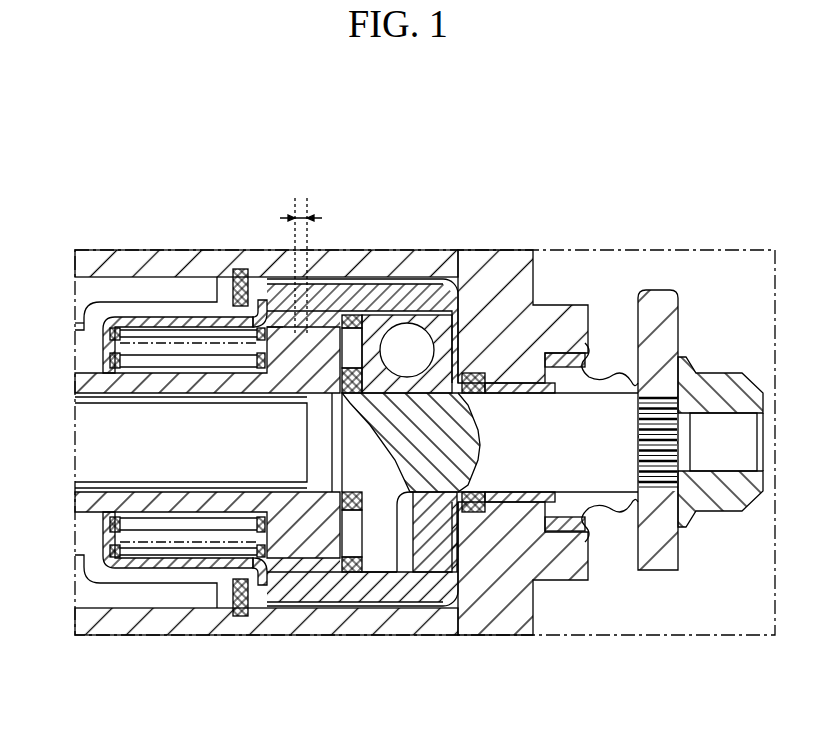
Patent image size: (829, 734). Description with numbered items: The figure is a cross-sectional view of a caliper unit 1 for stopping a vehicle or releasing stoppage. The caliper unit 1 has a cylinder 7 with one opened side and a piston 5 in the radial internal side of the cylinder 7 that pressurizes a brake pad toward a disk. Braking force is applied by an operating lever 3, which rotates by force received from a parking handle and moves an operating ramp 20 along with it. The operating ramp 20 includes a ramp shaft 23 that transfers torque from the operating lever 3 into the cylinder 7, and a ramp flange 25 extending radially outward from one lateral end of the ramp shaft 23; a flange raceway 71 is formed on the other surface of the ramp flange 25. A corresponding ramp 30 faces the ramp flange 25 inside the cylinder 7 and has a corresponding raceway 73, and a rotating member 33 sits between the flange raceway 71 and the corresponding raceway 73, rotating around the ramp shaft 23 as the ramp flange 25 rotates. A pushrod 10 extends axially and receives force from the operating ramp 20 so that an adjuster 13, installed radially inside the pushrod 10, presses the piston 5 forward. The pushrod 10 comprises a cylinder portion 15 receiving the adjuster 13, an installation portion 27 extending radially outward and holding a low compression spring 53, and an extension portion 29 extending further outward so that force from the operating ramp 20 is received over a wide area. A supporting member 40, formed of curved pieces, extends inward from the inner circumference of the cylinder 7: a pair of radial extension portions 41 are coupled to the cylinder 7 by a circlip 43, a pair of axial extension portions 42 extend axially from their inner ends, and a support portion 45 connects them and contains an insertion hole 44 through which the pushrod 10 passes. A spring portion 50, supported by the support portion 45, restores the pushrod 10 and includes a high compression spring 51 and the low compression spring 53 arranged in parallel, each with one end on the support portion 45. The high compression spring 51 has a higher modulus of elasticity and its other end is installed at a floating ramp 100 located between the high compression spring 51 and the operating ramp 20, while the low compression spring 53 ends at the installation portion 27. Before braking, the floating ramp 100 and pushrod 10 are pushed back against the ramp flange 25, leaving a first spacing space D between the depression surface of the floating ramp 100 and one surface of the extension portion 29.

The caliper unit 1 is at (617, 200).
The operating lever 3 is at (668, 572).
The piston 5 is at (177, 598).
The cylinder 7 is at (332, 622).
The pushrod 10 is at (135, 300).
The adjuster 13 is at (92, 450).
The cylinder portion 15 is at (92, 386).
The operating ramp 20 is at (440, 502).
The ramp shaft 23 is at (522, 465).
The ramp flange 25 is at (385, 615).
The installation portion 27 is at (263, 330).
The extension portion 29 is at (345, 275).
The corresponding ramp 30 is at (440, 300).
The rotating member 33 is at (407, 345).
The supporting member 40 is at (140, 565).
The radial extension portions 41 is at (273, 600).
The axial extension portions 42 is at (197, 565).
The circlip 43 is at (243, 605).
The insertion hole 44 is at (95, 545).
The support portion 45 is at (108, 560).
The spring portion 50 is at (140, 362).
The high compression spring 51 is at (157, 316).
The low compression spring 53 is at (198, 355).
The flange raceway 71 is at (425, 262).
The corresponding raceway 73 is at (463, 262).
The floating ramp 100 is at (280, 318).
The first spacing space D is at (307, 202).